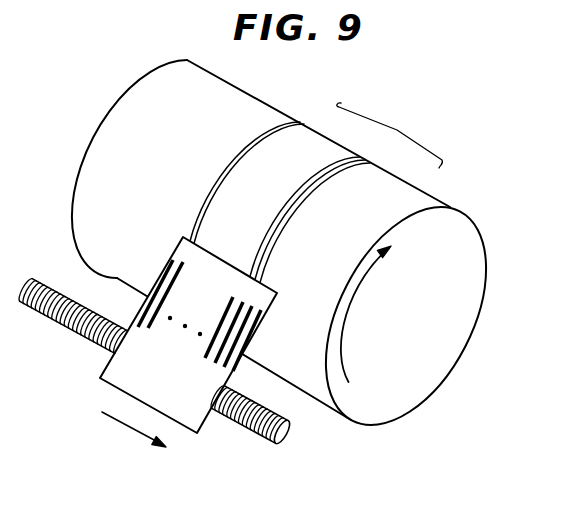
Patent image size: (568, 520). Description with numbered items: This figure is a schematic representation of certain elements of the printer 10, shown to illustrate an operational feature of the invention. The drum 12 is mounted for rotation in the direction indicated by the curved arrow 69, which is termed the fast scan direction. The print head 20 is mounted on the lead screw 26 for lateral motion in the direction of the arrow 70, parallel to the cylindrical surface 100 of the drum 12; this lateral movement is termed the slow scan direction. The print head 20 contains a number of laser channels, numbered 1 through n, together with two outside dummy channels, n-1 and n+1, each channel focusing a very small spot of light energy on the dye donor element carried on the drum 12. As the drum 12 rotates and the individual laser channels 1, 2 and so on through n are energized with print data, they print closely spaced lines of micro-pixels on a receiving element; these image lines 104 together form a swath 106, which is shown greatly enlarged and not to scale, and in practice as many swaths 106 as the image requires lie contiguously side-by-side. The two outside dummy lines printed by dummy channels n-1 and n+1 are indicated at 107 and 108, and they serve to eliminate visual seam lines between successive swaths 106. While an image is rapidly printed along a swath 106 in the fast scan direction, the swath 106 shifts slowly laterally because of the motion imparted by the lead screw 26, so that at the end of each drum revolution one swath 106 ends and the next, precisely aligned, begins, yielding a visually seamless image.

The printer 10 is at (59, 71).
The cylindrical surface 100 is at (307, 255).
The drum 12 is at (492, 268).
The swath 106 is at (397, 130).
The dummy line 108 is at (210, 203).
The image lines 104 is at (230, 178).
The dummy line 107 is at (297, 235).
The curved arrow 69 is at (350, 318).
The arrow 70 is at (198, 347).
The print head 20 is at (100, 372).
The lead screw 26 is at (242, 432).
The laser channel n is at (154, 304).
The dummy laser channel n-1 is at (236, 362).
The laser channel 2 is at (224, 344).
The laser channel 1 is at (235, 351).